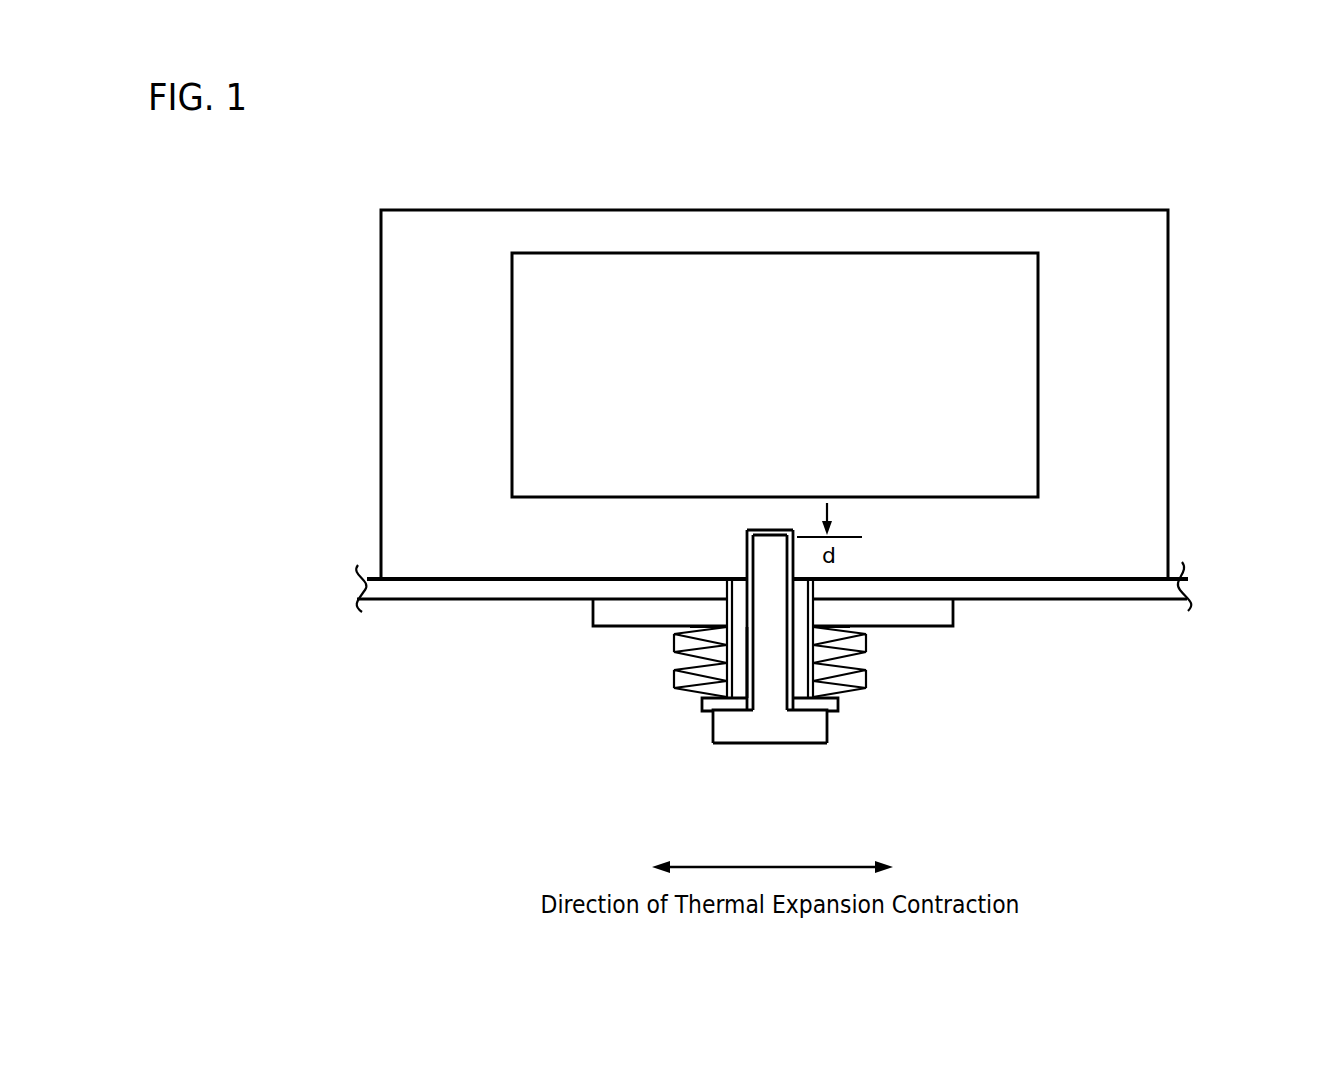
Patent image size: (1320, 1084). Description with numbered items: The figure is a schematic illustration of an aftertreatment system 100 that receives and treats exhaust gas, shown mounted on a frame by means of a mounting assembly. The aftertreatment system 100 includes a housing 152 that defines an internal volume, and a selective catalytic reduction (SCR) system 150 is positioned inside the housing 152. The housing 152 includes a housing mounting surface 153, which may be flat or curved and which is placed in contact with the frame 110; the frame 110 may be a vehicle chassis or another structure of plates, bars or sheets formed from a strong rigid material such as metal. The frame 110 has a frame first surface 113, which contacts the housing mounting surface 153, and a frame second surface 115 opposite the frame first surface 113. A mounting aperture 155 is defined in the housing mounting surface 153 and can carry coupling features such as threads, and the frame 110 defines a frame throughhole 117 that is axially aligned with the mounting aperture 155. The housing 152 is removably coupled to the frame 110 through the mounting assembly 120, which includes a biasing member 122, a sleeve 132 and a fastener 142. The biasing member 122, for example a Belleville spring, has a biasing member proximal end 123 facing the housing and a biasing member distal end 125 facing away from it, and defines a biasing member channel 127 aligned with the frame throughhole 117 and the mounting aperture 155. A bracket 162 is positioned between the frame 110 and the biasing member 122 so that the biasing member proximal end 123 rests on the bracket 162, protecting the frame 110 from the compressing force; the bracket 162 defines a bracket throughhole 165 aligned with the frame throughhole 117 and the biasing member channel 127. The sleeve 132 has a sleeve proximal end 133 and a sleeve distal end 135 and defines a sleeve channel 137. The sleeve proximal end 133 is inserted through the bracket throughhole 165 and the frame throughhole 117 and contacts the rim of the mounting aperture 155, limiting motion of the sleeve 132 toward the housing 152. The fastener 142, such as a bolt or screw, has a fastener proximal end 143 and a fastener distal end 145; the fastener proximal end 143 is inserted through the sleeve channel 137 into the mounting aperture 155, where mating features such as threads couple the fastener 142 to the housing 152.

The aftertreatment system 100 is at (1134, 172).
The frame 110 is at (749, 637).
The frame first surface 113 is at (465, 580).
The frame second surface 115 is at (538, 590).
The frame throughhole 117 is at (813, 584).
The mounting assembly 120 is at (917, 714).
The biasing member 122 is at (811, 692).
The biasing member proximal end 123 is at (863, 637).
The biasing member distal end 125 is at (836, 698).
The biasing member channel 127 is at (707, 701).
The sleeve 132 is at (760, 750).
The sleeve proximal end 133 is at (707, 606).
The sleeve distal end 135 is at (752, 772).
The sleeve channel 137 is at (746, 632).
The fastener 142 is at (767, 740).
The fastener proximal end 143 is at (776, 562).
The fastener distal end 145 is at (803, 745).
The selective catalytic reduction (SCR) system 150 is at (795, 421).
The housing 152 is at (380, 267).
The housing mounting surface 153 is at (390, 580).
The mounting aperture 155 is at (746, 538).
The bracket 162 is at (595, 626).
The bracket throughhole 165 is at (760, 622).